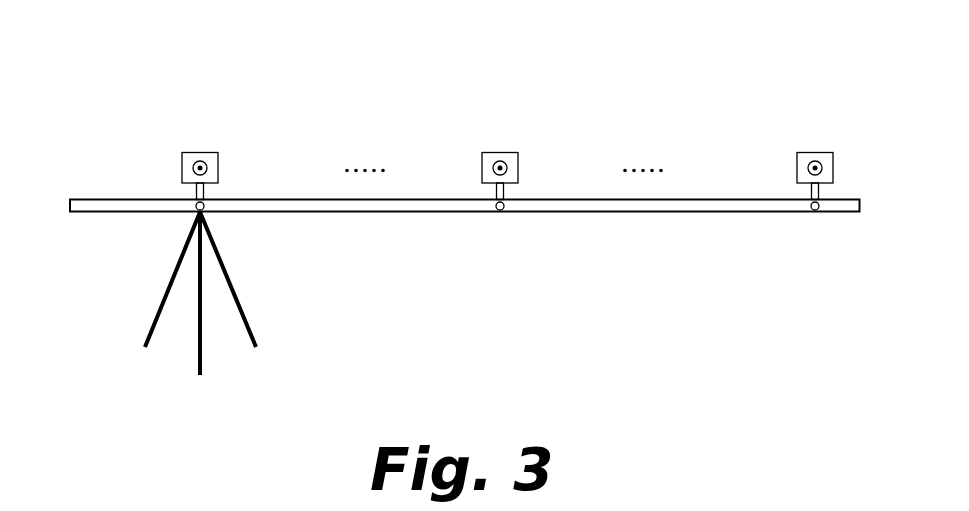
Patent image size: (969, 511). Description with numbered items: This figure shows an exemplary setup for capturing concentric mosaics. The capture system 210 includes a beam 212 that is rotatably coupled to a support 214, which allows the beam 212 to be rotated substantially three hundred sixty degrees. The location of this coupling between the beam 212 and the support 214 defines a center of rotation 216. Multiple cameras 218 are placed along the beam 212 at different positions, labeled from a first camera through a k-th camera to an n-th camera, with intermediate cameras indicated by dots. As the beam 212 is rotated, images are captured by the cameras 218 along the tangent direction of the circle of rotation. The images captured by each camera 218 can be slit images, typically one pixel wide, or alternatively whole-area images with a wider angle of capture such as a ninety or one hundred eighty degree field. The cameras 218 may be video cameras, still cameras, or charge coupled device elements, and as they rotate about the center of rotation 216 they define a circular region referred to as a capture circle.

The capture system 210 is at (300, 46).
The beam 212 is at (590, 207).
The support 214 is at (168, 290).
The center of rotation 216 is at (207, 217).
The cameras 218 is at (188, 157).